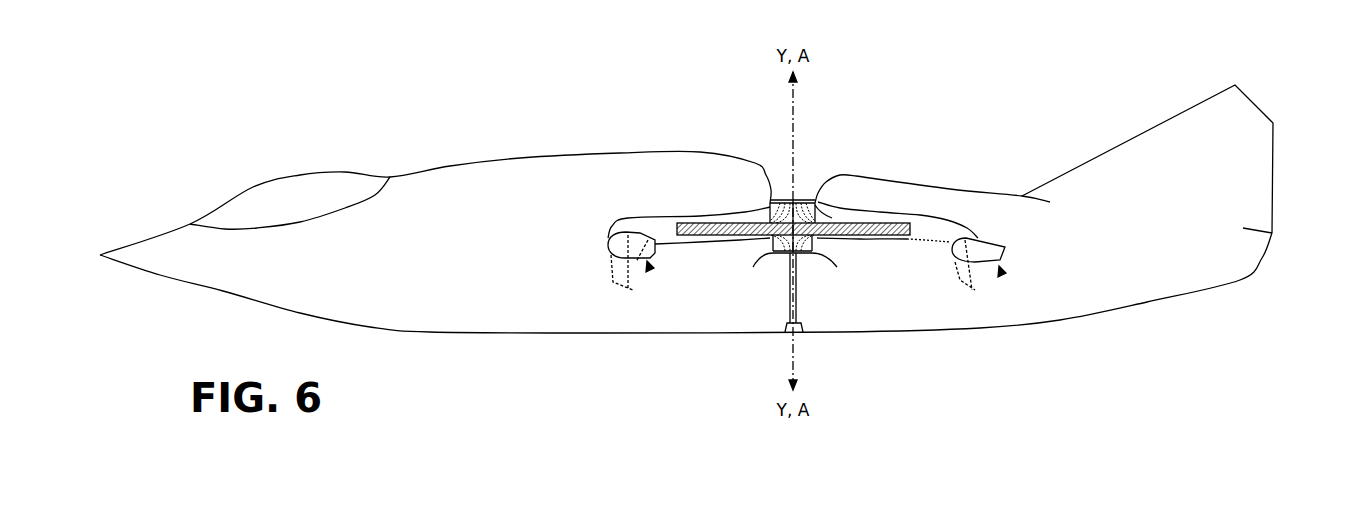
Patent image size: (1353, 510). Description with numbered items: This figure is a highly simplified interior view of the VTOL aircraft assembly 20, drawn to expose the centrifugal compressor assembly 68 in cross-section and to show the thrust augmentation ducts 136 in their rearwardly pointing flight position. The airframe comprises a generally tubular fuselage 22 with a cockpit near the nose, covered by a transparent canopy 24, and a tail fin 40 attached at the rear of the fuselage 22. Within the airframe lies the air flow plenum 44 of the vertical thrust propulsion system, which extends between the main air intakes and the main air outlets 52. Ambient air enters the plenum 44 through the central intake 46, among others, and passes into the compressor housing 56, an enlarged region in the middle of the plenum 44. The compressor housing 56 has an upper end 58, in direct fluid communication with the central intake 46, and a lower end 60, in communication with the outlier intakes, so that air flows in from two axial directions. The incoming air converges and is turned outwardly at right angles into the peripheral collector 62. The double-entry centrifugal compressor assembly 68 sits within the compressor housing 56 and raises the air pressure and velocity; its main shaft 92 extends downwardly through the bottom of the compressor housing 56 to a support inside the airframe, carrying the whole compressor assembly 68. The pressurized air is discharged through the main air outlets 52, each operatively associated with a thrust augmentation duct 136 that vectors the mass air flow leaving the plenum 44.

The aircraft assembly 20 is at (465, 128).
The fuselage 22 is at (592, 333).
The transparent canopy 24 is at (253, 187).
The tail fin 40 is at (1147, 159).
The air flow plenum 44 is at (650, 215).
The central intake 46 is at (835, 178).
The main air outlets 52 is at (610, 236).
The compressor housing 56 is at (750, 213).
The upper end 58 is at (822, 196).
The lower end 60 is at (833, 267).
The peripheral collector 62 is at (927, 217).
The centrifugal compressor assembly 68 is at (697, 237).
The main shaft 92 is at (790, 300).
The thrust augmentation duct 136 is at (650, 268).